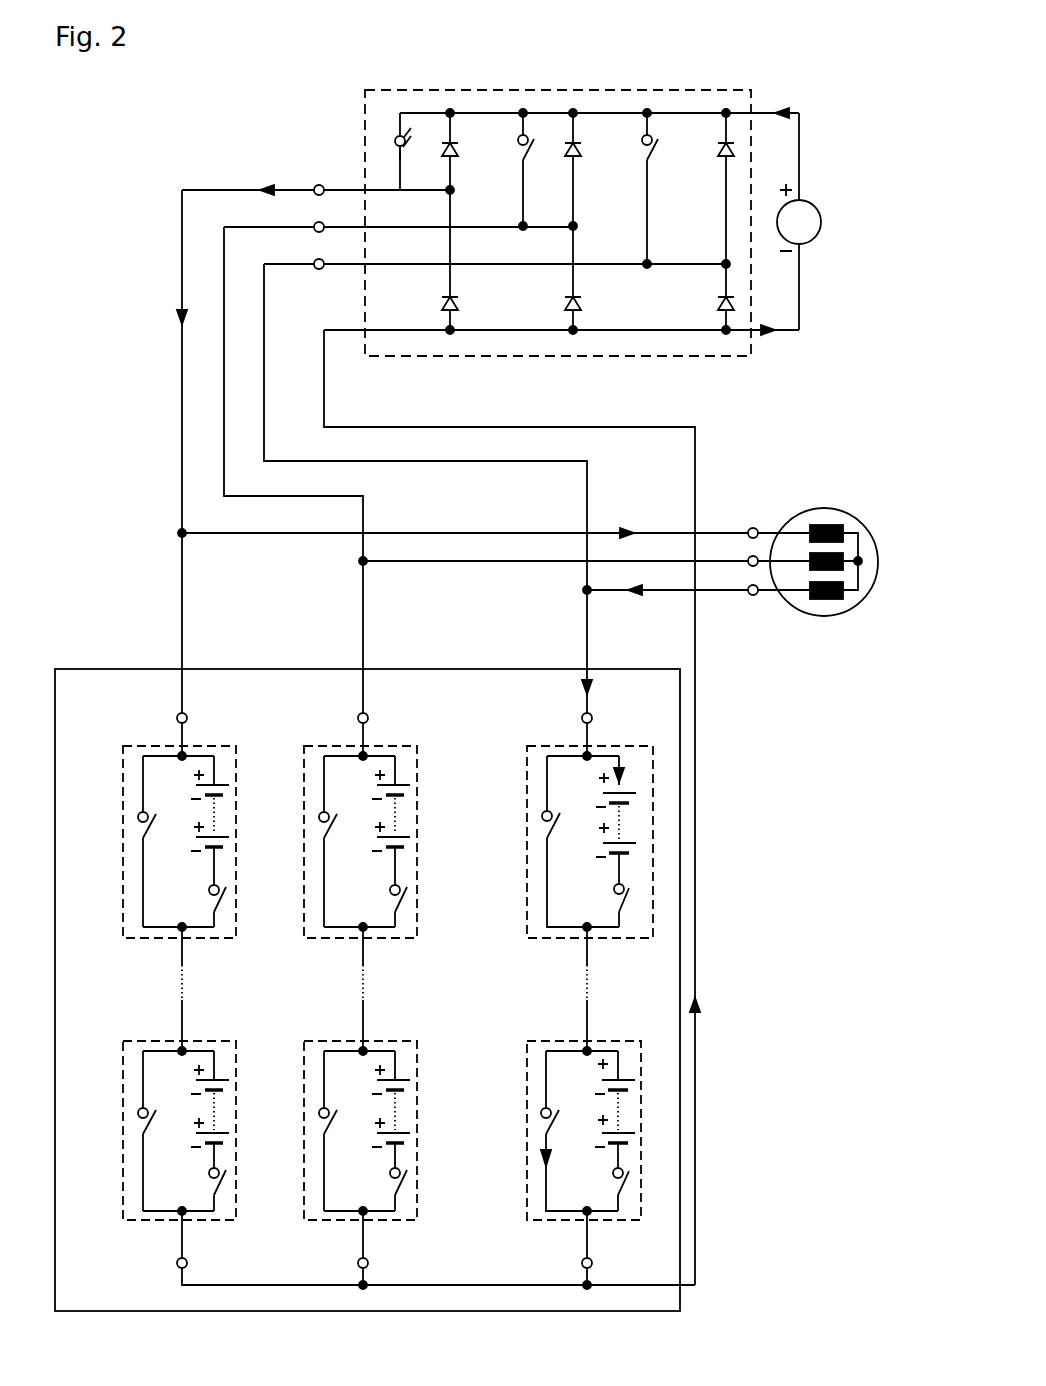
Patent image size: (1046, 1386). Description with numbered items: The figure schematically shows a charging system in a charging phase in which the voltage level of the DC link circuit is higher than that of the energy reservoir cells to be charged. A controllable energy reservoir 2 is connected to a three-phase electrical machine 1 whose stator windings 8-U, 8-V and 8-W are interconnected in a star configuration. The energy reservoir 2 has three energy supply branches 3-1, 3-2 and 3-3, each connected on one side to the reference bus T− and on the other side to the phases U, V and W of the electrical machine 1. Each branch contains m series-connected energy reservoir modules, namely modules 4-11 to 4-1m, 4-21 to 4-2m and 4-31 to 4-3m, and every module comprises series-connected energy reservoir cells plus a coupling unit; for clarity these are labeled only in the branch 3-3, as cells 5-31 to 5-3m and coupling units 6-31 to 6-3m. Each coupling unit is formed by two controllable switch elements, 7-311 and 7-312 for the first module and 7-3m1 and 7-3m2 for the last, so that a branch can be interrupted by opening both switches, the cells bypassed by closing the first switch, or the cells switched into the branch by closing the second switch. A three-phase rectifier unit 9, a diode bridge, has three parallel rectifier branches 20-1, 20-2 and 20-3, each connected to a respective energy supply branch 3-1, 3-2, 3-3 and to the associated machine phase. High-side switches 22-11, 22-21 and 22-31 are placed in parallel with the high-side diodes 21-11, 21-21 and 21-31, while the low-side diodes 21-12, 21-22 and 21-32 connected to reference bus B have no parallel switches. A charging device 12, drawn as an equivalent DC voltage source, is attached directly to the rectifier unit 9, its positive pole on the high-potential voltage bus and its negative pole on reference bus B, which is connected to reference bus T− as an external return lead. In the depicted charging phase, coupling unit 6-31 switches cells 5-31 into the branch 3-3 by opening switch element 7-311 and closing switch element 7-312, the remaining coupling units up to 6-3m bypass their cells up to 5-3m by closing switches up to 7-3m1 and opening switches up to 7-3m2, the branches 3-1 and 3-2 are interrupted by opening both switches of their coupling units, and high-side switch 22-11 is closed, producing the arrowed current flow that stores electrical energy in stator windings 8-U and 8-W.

The three-phase electrical machine 1 is at (801, 598).
The controllable energy reservoir 2 is at (90, 684).
The energy supply branch 3-1 is at (182, 688).
The energy supply branch 3-2 is at (363, 688).
The energy supply branch 3-3 is at (587, 700).
The energy reservoir module 4-11 is at (128, 765).
The energy reservoir module 4-21 is at (310, 765).
The energy reservoir module 4-31 is at (533, 765).
The energy reservoir module 4-1m is at (128, 1060).
The energy reservoir module 4-2m is at (310, 1060).
The energy reservoir module 4-3m is at (533, 1060).
The energy reservoir cells 5-31 is at (624, 818).
The energy reservoir cells 5-3m is at (624, 1110).
The coupling unit 6-31 is at (578, 906).
The coupling unit 6-3m is at (578, 1194).
The controllable switch element 7-311 is at (543, 821).
The controllable switch element 7-312 is at (627, 893).
The controllable switch element 7-3m1 is at (542, 1116).
The controllable switch element 7-3m2 is at (627, 1178).
The stator winding 8-U is at (827, 525).
The stator winding 8-V is at (812, 560).
The stator winding 8-W is at (827, 598).
The three-phase rectifier unit 9 is at (371, 90).
The charging device 12 is at (821, 225).
The rectifier branch 20-1 is at (462, 149).
The rectifier branch 20-2 is at (585, 161).
The rectifier branch 20-3 is at (712, 161).
The high-side diode 21-11 is at (444, 150).
The low-side diode 21-12 is at (440, 303).
The high-side diode 21-21 is at (567, 150).
The low-side diode 21-22 is at (562, 303).
The high-side diode 21-31 is at (720, 150).
The low-side diode 21-32 is at (716, 303).
The high-side switch 22-11 is at (394, 149).
The high-side switch 22-21 is at (519, 137).
The high-side switch 22-31 is at (643, 137).